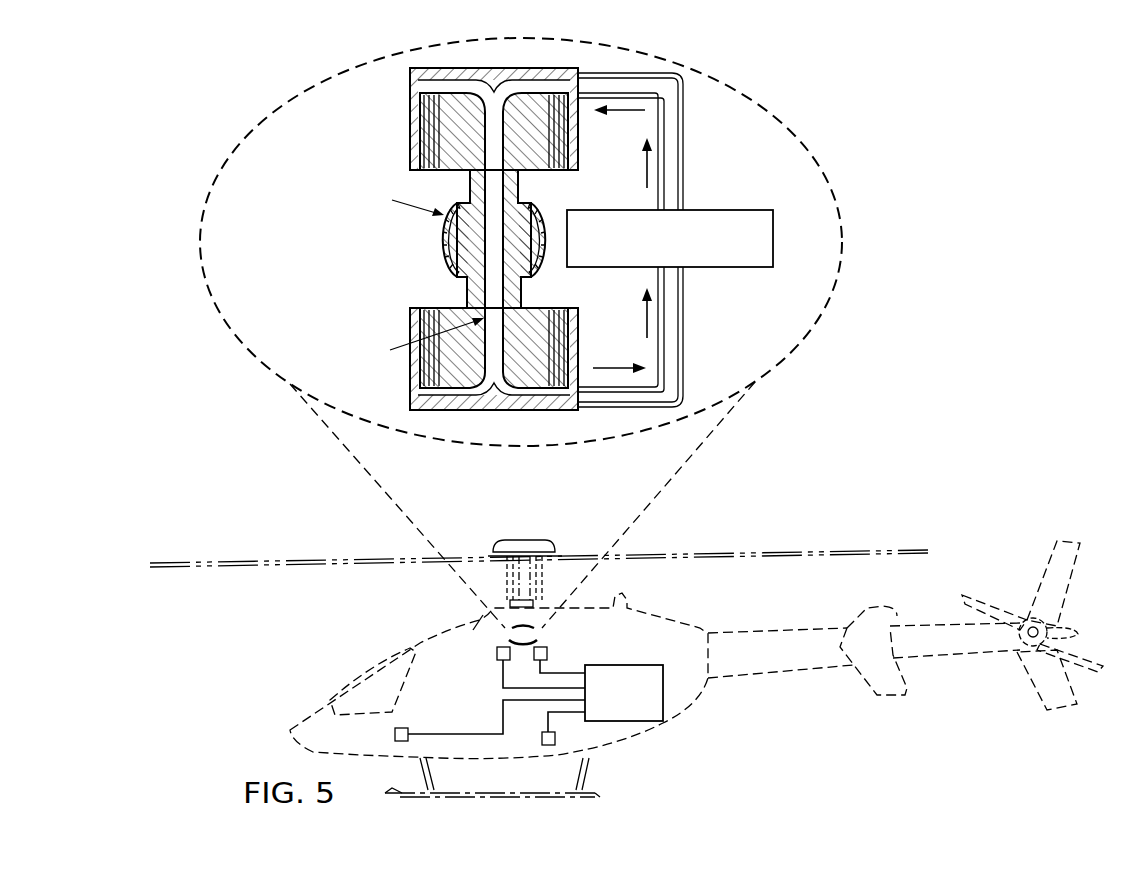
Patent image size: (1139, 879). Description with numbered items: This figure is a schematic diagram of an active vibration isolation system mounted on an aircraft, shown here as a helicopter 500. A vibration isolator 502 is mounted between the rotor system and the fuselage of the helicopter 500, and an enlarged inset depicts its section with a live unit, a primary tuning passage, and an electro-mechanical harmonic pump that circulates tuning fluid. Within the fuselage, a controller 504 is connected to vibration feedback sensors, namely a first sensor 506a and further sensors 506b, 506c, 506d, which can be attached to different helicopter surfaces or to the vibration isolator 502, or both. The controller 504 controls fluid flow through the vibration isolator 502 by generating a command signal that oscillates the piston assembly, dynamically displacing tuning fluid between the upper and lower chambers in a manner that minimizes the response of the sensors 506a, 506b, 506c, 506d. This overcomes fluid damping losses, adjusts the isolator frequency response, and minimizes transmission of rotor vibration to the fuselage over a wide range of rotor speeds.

The helicopter 500 is at (826, 497).
The vibration isolator 502 is at (410, 132).
The controller 504 is at (603, 707).
The first sensor 506a is at (497, 653).
The vibration feedback sensor 506b is at (547, 653).
The vibration feedback sensor 506c is at (401, 728).
The vibration feedback sensor 506d is at (542, 739).